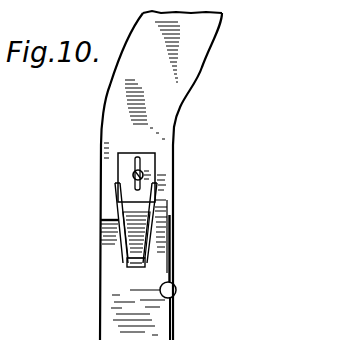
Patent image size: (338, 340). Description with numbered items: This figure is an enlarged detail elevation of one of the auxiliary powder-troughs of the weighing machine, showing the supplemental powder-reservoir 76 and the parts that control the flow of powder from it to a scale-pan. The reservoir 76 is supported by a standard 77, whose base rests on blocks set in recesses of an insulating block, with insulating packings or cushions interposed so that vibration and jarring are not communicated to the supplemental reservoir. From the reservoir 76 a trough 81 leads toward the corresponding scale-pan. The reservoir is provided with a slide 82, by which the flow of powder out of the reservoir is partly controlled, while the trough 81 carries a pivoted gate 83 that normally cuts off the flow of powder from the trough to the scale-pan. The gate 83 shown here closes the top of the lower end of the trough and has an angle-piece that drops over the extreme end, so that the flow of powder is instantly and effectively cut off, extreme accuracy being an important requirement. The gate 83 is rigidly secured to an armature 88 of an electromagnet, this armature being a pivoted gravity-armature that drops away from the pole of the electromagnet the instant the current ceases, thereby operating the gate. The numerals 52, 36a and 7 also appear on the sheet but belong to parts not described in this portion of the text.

The supplemental powder-reservoir 76 is at (0, 128).
The standard 77 is at (160, 314).
The trough 81 is at (113, 236).
The slide 82 is at (147, 165).
The pivoted gate 83 is at (123, 249).
The armature 88 is at (176, 281).
The lever 52 is at (50, 11).
The arm 36a is at (14, 243).
The frame 7 is at (4, 297).